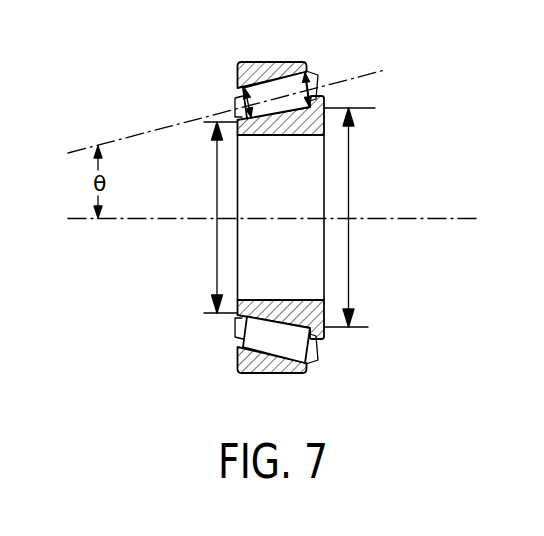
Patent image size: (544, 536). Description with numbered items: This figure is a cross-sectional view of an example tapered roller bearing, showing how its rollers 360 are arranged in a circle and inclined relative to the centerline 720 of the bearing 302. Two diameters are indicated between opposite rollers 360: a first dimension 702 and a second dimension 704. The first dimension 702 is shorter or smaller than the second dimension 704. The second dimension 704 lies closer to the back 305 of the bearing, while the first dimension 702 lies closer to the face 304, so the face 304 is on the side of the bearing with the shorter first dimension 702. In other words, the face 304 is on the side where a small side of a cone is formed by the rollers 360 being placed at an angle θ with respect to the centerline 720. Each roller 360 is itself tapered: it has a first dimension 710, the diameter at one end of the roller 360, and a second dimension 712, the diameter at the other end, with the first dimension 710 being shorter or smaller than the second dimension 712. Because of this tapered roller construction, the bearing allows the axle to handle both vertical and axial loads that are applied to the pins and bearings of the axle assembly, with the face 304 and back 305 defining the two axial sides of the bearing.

The bearing 302 is at (324, 334).
The face 304 is at (196, 164).
The back 305 is at (380, 242).
The roller 360 is at (310, 71).
The first dimension 702 is at (217, 194).
The second dimension 704 is at (349, 191).
The first dimension 710 is at (236, 100).
The second dimension 712 is at (318, 82).
The centerline 720 is at (136, 221).